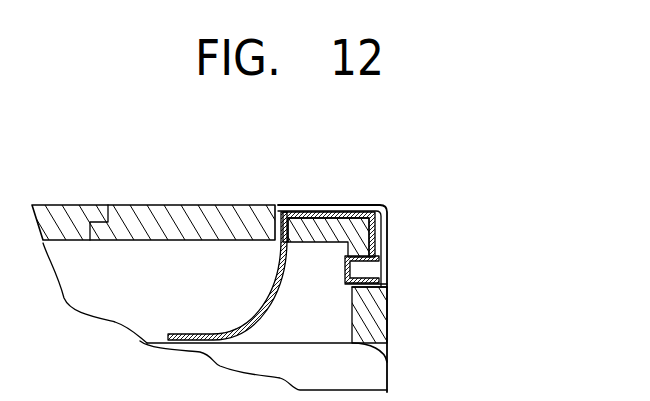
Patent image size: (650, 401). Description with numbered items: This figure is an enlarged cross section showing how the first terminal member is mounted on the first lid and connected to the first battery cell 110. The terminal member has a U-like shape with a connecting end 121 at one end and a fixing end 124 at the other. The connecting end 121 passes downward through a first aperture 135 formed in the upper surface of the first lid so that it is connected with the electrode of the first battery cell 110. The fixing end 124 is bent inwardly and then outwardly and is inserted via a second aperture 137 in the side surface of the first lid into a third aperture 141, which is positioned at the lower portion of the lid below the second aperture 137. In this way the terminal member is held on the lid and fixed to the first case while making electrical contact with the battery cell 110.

The first battery cell 110 is at (375, 375).
The connecting end 121 is at (257, 307).
The fixing end 124 is at (385, 266).
The first aperture 135 is at (280, 205).
The second aperture 137 is at (362, 205).
The third aperture 141 is at (385, 287).